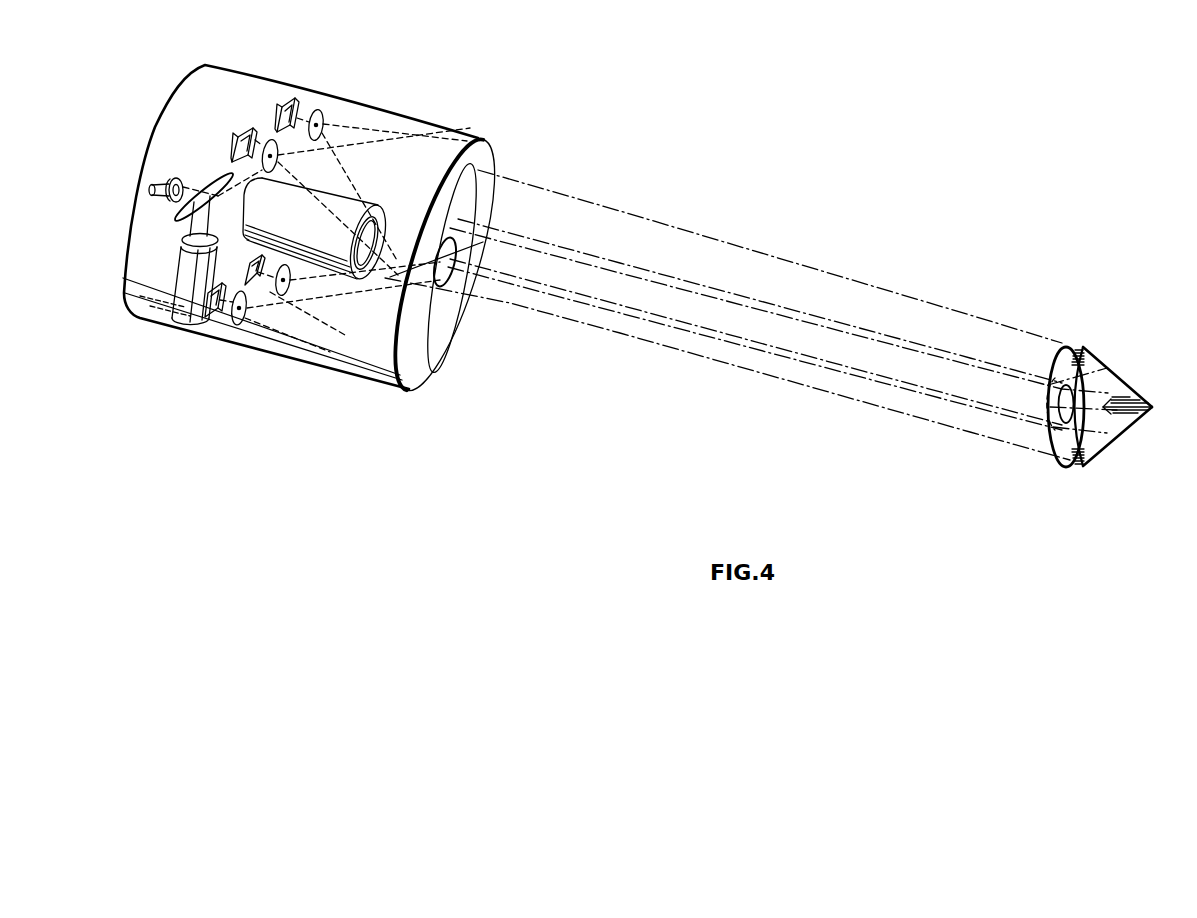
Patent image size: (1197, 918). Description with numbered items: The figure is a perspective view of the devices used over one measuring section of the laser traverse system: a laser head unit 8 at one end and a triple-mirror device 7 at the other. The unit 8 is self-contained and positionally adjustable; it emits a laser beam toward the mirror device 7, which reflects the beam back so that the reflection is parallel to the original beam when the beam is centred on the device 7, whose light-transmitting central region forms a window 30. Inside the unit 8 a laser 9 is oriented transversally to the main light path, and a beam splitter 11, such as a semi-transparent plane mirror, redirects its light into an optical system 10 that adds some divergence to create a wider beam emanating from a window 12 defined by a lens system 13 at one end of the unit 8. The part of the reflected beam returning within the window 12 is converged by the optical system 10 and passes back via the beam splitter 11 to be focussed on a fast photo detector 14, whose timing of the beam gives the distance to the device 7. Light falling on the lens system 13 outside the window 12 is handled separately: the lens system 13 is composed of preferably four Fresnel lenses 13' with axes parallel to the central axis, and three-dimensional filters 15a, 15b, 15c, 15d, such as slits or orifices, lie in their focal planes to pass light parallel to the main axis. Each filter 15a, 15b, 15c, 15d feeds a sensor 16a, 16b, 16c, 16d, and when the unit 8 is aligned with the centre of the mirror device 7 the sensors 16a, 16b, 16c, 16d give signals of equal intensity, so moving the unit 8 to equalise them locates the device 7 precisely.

The triple-mirror device 7 is at (1119, 373).
The laser head unit 8 is at (394, 421).
The laser 9 is at (178, 302).
The optical system 10 is at (331, 262).
The beam splitter 11 is at (177, 221).
The window 12 is at (438, 287).
The lens system 13 is at (458, 261).
The Fresnel lenses 13' is at (460, 292).
The photo detector 14 is at (167, 200).
The three-dimensional filter 15a is at (262, 165).
The three-dimensional filter 15b is at (322, 115).
The three-dimensional filter 15c is at (237, 327).
The three-dimensional filter 15d is at (289, 297).
The sensor 16a is at (233, 150).
The sensor 16b is at (296, 107).
The sensor 16c is at (213, 320).
The sensor 16d is at (261, 262).
The window 30 is at (1155, 408).